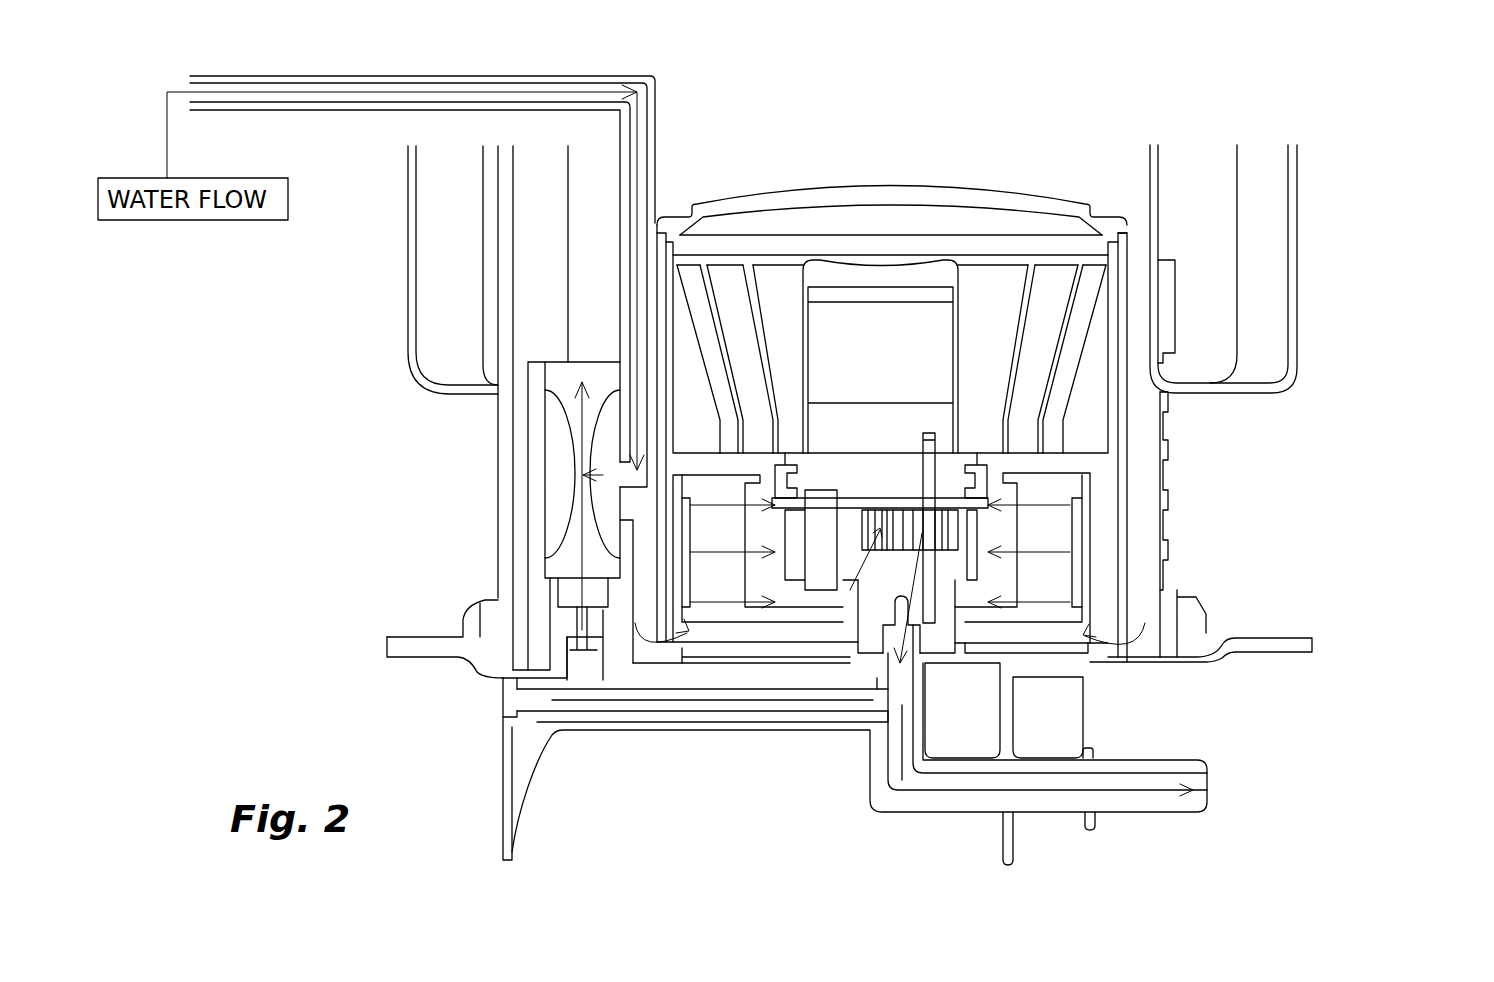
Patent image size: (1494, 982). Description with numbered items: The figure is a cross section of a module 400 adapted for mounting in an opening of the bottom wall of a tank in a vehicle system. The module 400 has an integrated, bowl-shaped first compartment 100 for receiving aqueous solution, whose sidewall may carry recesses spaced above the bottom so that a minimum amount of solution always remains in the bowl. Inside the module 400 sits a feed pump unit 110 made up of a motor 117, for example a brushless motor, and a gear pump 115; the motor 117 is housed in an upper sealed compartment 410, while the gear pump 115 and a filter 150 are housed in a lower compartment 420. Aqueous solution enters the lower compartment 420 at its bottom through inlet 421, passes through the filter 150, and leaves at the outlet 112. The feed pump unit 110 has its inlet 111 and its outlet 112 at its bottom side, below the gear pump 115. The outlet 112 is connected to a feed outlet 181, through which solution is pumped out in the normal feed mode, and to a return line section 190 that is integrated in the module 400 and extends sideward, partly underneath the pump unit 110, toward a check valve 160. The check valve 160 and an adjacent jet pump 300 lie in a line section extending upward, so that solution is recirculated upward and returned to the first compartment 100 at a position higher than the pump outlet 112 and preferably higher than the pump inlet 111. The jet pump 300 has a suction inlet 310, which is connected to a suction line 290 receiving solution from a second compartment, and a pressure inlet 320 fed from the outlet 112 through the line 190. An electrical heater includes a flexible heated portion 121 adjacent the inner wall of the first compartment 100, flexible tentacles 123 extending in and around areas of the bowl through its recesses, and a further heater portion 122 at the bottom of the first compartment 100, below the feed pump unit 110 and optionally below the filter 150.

The suction line 290 is at (513, 84).
The jet pump 300 is at (597, 337).
The suction inlet 310 is at (622, 417).
The pressure inlet 320 is at (577, 636).
The heated portion 121 is at (823, 268).
The flexible tentacles 123 is at (1212, 393).
The module 400 is at (1372, 176).
The upper sealed compartment 410 is at (986, 180).
The motor 117 is at (1050, 374).
The lower compartment 420 is at (1117, 521).
The gear pump 115 is at (955, 530).
The feed pump unit 110 is at (1418, 514).
The first compartment 100 is at (1178, 472).
The filter 150 is at (1060, 578).
The further heater portion 122 is at (1058, 657).
The outlet 112 is at (900, 633).
The inlet 111 is at (847, 597).
The line 190 is at (722, 700).
The check valve 160 is at (608, 657).
The inlet 421 is at (652, 658).
The feed outlet 181 is at (1147, 812).